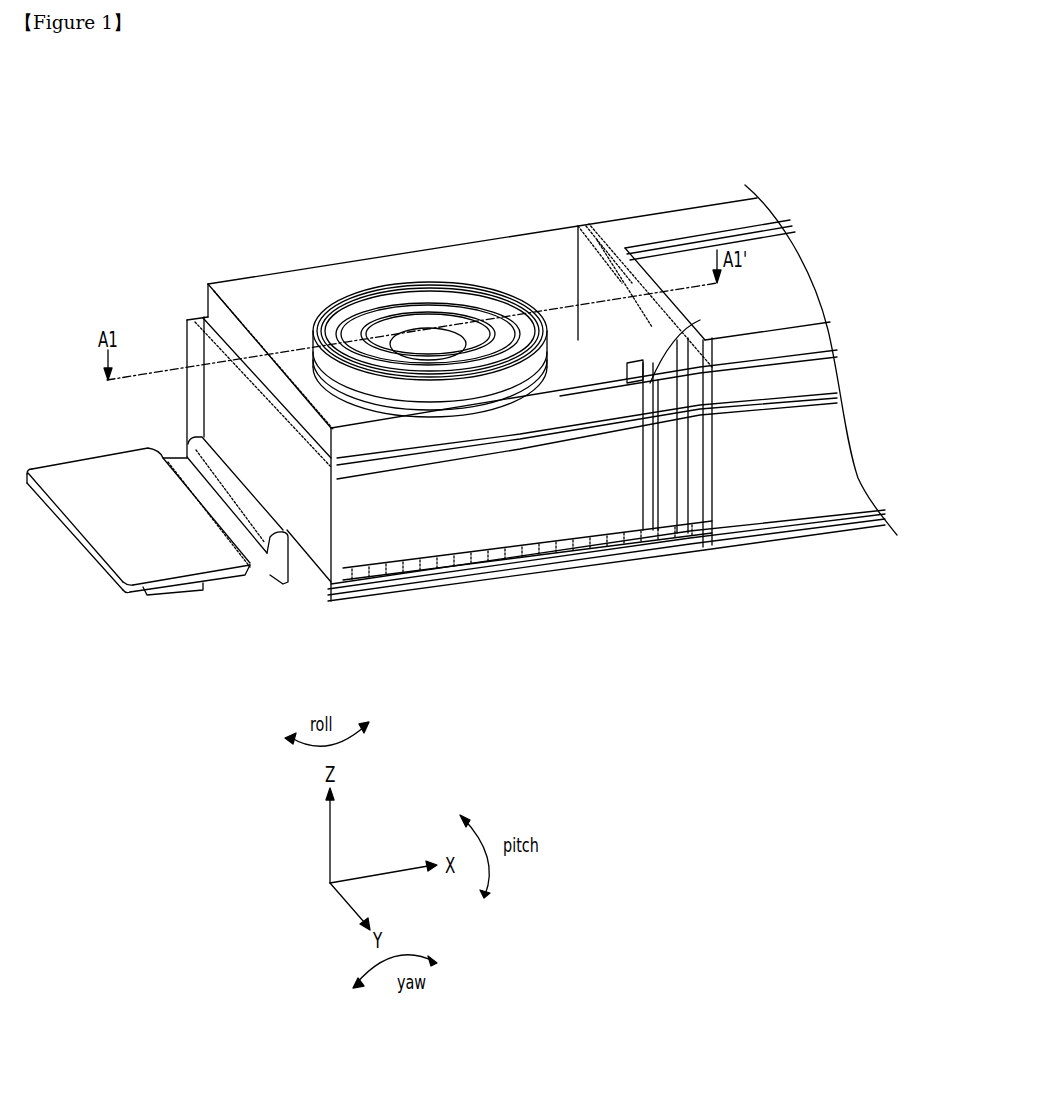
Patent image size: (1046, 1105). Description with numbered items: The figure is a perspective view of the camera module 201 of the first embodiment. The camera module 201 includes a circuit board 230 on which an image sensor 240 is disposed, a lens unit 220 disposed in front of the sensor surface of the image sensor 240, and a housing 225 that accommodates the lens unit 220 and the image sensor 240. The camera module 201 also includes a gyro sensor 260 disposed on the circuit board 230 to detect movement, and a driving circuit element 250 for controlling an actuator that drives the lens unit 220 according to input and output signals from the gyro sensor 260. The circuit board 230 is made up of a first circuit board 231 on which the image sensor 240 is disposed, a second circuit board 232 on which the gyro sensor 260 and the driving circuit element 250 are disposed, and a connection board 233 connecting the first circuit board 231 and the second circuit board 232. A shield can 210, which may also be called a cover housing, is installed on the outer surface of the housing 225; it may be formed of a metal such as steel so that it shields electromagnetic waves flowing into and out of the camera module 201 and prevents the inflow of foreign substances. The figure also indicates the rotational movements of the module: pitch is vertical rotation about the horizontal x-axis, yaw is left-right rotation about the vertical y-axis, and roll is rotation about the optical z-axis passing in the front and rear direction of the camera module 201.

The camera module 201 is at (239, 158).
The shield can 210 is at (506, 252).
The lens unit 220 is at (412, 302).
The housing 225 is at (218, 405).
The circuit board 230 is at (765, 660).
The first circuit board 231 is at (603, 562).
The second circuit board 232 is at (687, 463).
The connection board 233 is at (687, 543).
The image sensor 240 is at (453, 563).
The driving circuit element 250 is at (700, 320).
The gyro sensor 260 is at (568, 292).